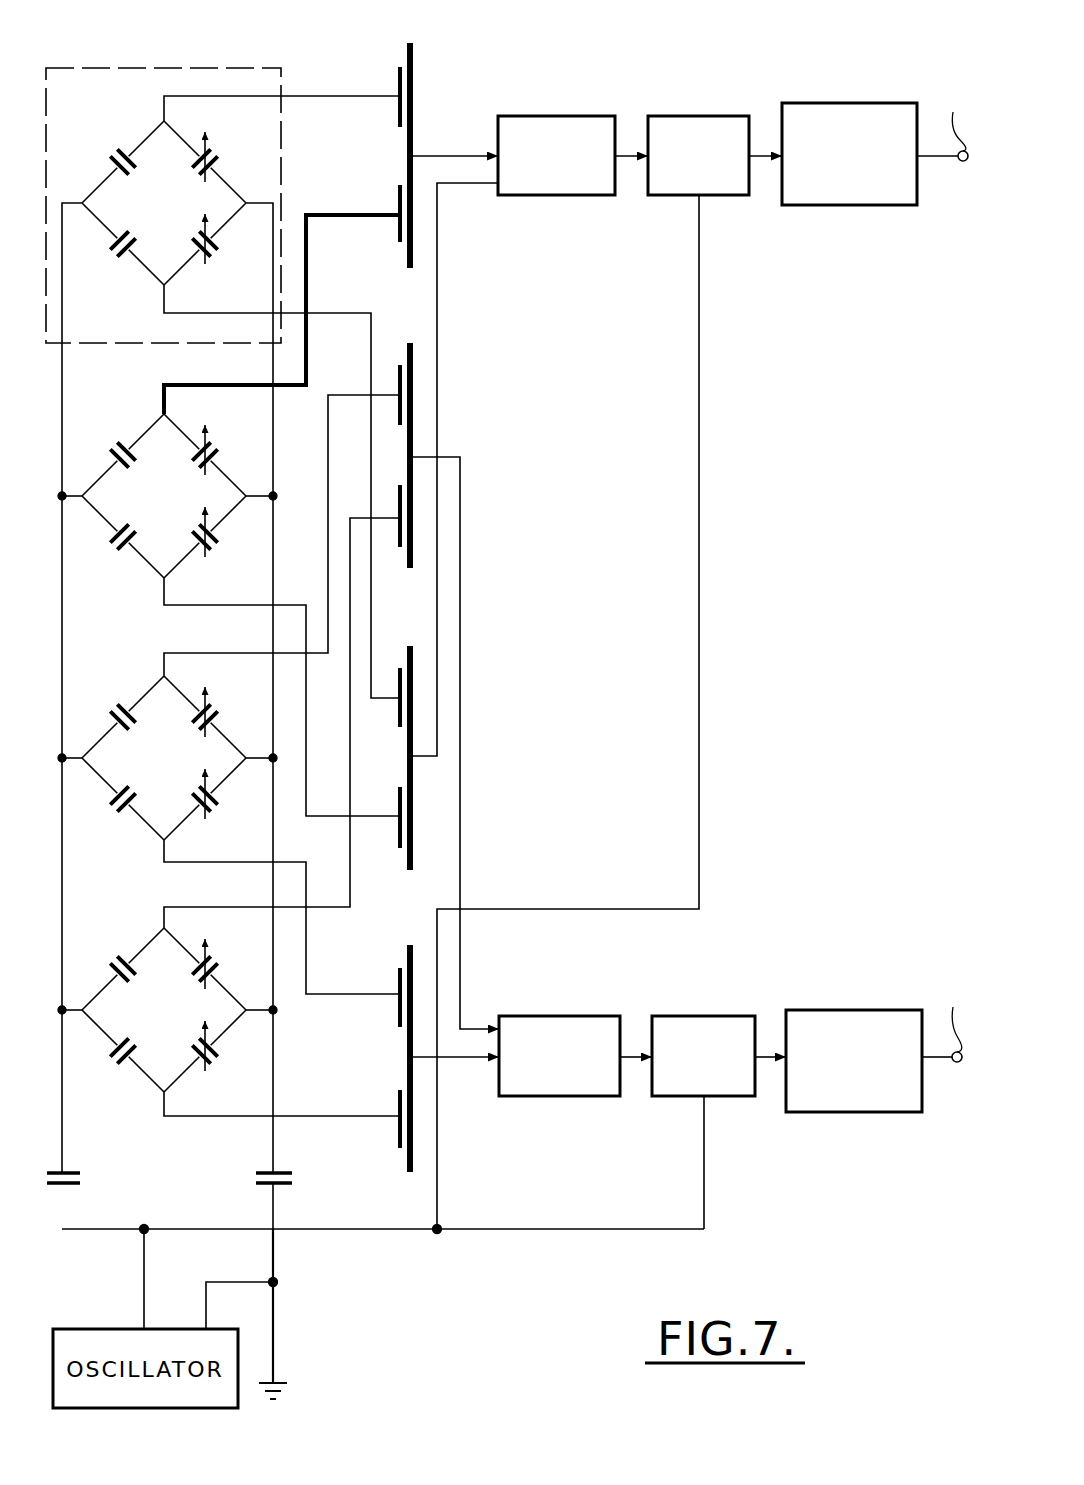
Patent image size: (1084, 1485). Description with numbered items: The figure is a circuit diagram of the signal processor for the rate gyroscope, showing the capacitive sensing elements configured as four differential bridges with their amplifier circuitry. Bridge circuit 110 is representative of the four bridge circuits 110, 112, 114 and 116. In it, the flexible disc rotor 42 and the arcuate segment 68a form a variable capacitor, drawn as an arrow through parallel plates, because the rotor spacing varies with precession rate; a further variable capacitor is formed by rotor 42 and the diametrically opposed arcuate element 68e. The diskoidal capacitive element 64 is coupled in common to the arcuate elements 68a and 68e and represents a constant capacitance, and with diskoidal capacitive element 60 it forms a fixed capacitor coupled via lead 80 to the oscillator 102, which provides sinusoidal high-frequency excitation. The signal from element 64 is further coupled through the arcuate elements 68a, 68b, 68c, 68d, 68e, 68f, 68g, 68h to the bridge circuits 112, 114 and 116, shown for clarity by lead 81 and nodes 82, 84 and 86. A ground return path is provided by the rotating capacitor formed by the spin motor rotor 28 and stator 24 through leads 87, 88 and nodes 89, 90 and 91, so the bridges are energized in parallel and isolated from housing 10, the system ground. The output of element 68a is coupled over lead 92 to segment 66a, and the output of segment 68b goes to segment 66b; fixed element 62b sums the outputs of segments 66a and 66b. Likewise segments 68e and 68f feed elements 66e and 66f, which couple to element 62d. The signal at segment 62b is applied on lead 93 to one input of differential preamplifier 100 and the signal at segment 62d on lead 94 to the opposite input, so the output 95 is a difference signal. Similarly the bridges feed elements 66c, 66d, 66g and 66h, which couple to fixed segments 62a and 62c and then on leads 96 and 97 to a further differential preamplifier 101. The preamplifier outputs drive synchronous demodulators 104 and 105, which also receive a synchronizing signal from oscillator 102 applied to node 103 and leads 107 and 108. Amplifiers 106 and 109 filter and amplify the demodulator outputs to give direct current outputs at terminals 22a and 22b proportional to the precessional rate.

The housing 10 is at (284, 1383).
The x output terminal 22a is at (963, 161).
The y output terminal 22b is at (958, 1062).
The stator 24 is at (256, 1181).
The rotor 28 is at (283, 1172).
The flexible disc rotor 42 is at (212, 153).
The diskoidal capacitive element 60 is at (82, 1180).
The fixed segment 62a is at (414, 432).
The capacitive segment 62b is at (414, 90).
The fixed segment 62c is at (414, 1148).
The capacitive element 62d is at (414, 848).
The diskoidal capacitive element 64 is at (113, 148).
The segment 66a is at (398, 125).
The segment 66b is at (397, 242).
The capacitive element 66c is at (400, 362).
The capacitive element 66d is at (400, 548).
The capacitive element 66e is at (399, 727).
The capacitive element 66f is at (399, 849).
The capacitive element 66g is at (399, 967).
The capacitive element 66h is at (399, 1090).
The arcuate segment 68a is at (182, 158).
The segment 68b is at (184, 452).
The arcuate element 68c is at (185, 716).
The arcuate element 68d is at (185, 968).
The arcuate element 68e is at (190, 238).
The capacitive segment 68f is at (192, 532).
The arcuate element 68g is at (190, 802).
The arcuate element 68h is at (190, 1055).
The lead 80 is at (104, 1230).
The lead 81 is at (62, 1120).
The node 82 is at (66, 1012).
The node 84 is at (66, 760).
The node 86 is at (66, 498).
The lead 87 is at (276, 1225).
The lead 88 is at (273, 1062).
The node 89 is at (277, 1011).
The node 90 is at (276, 762).
The node 91 is at (276, 494).
The lead 92 is at (340, 97).
The lead 93 is at (450, 155).
The lead 94 is at (438, 290).
The output 95 is at (628, 160).
The lead 96 is at (468, 1060).
The lead 97 is at (461, 795).
The preamplifier 100 is at (565, 115).
The preamplifier 101 is at (556, 1015).
The oscillator 102 is at (182, 1262).
The node 103 is at (440, 1233).
The synchronous demodulator 104 is at (699, 115).
The synchronous demodulator 105 is at (705, 1015).
The amplifier 106 is at (850, 102).
The lead 107 is at (700, 540).
The lead 108 is at (705, 1165).
The amplifier 109 is at (852, 1009).
The bridge circuit 110 is at (281, 72).
The bridge circuit 112 is at (135, 386).
The bridge circuit 114 is at (125, 659).
The bridge circuit 116 is at (126, 916).